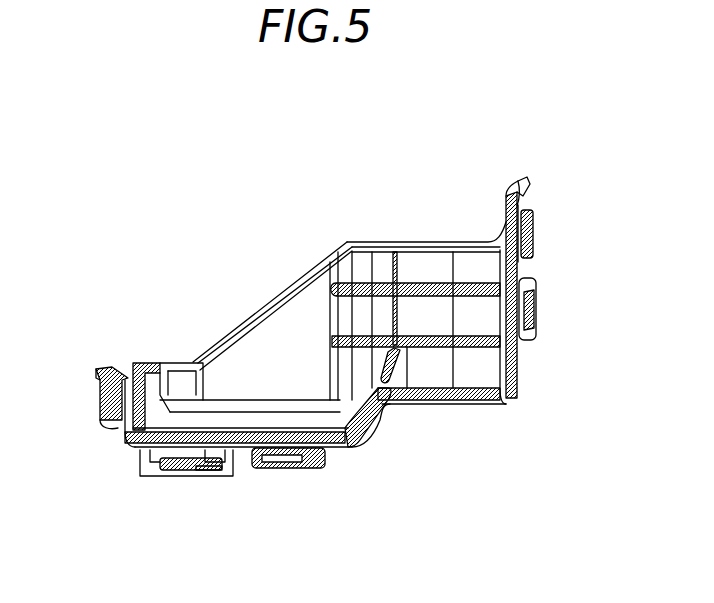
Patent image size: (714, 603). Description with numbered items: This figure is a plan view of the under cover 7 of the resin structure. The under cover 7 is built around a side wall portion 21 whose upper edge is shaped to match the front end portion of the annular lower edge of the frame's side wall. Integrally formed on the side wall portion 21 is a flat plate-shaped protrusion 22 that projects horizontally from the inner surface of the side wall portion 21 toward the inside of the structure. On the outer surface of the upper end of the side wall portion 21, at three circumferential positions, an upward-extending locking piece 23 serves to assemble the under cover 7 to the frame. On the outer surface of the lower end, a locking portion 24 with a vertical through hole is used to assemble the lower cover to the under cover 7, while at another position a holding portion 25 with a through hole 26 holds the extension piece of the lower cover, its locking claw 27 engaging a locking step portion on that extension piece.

The under cover 7 is at (327, 312).
The side wall portion 21 is at (368, 432).
The protrusion 22 is at (253, 312).
The locking piece 23 is at (533, 232).
The locking portion 24 is at (535, 310).
The holding portion 25 is at (207, 478).
The through hole 26 is at (150, 455).
The locking claw 27 is at (182, 478).